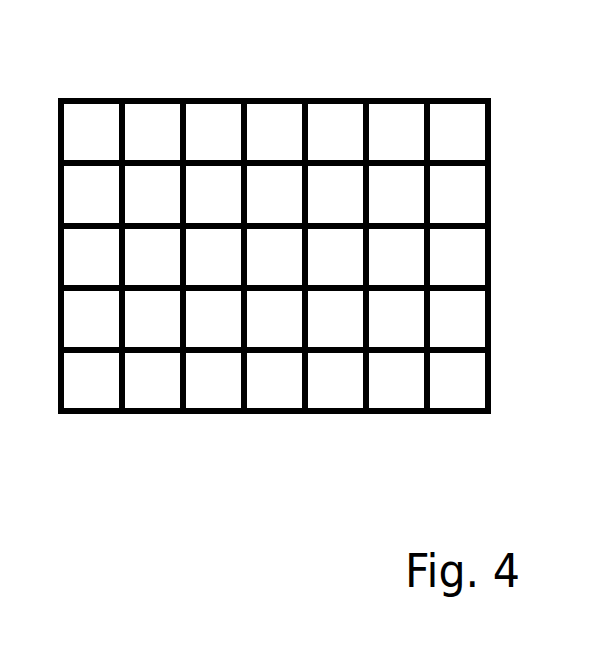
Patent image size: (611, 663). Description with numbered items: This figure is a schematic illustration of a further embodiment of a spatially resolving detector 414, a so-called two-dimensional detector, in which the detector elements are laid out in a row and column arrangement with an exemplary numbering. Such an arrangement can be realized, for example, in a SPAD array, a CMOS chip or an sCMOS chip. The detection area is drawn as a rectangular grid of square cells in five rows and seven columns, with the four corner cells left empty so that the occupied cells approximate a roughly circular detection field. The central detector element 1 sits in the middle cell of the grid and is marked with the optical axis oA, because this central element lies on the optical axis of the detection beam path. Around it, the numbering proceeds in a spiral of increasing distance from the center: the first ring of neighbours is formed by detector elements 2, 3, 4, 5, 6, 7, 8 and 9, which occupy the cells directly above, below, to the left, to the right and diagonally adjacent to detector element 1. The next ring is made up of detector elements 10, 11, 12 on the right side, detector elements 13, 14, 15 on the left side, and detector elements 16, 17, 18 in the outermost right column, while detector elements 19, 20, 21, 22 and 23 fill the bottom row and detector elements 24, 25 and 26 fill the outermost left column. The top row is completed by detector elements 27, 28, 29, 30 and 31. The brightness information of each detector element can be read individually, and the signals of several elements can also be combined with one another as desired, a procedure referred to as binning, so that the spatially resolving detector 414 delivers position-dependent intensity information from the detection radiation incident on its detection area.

The spatially resolving detector 414 is at (270, 213).
The detector element 1 is at (274, 257).
The detector element 2 is at (335, 194).
The detector element 3 is at (335, 257).
The detector element 4 is at (335, 319).
The detector element 5 is at (274, 319).
The detector element 6 is at (213, 319).
The detector element 7 is at (213, 257).
The detector element 8 is at (213, 194).
The detector element 9 is at (274, 194).
The detector element 10 is at (396, 194).
The detector element 11 is at (396, 257).
The detector element 12 is at (396, 319).
The detector element 13 is at (152, 319).
The detector element 14 is at (152, 257).
The detector element 15 is at (152, 194).
The detector element 16 is at (457, 194).
The detector element 17 is at (457, 257).
The detector element 18 is at (457, 319).
The detector element 19 is at (396, 380).
The detector element 20 is at (335, 380).
The detector element 21 is at (274, 380).
The detector element 22 is at (213, 380).
The detector element 23 is at (152, 380).
The detector element 24 is at (91, 319).
The detector element 25 is at (91, 257).
The detector element 26 is at (91, 194).
The detector element 27 is at (152, 132).
The detector element 28 is at (213, 132).
The detector element 29 is at (274, 132).
The detector element 30 is at (335, 132).
The detector element 31 is at (396, 132).